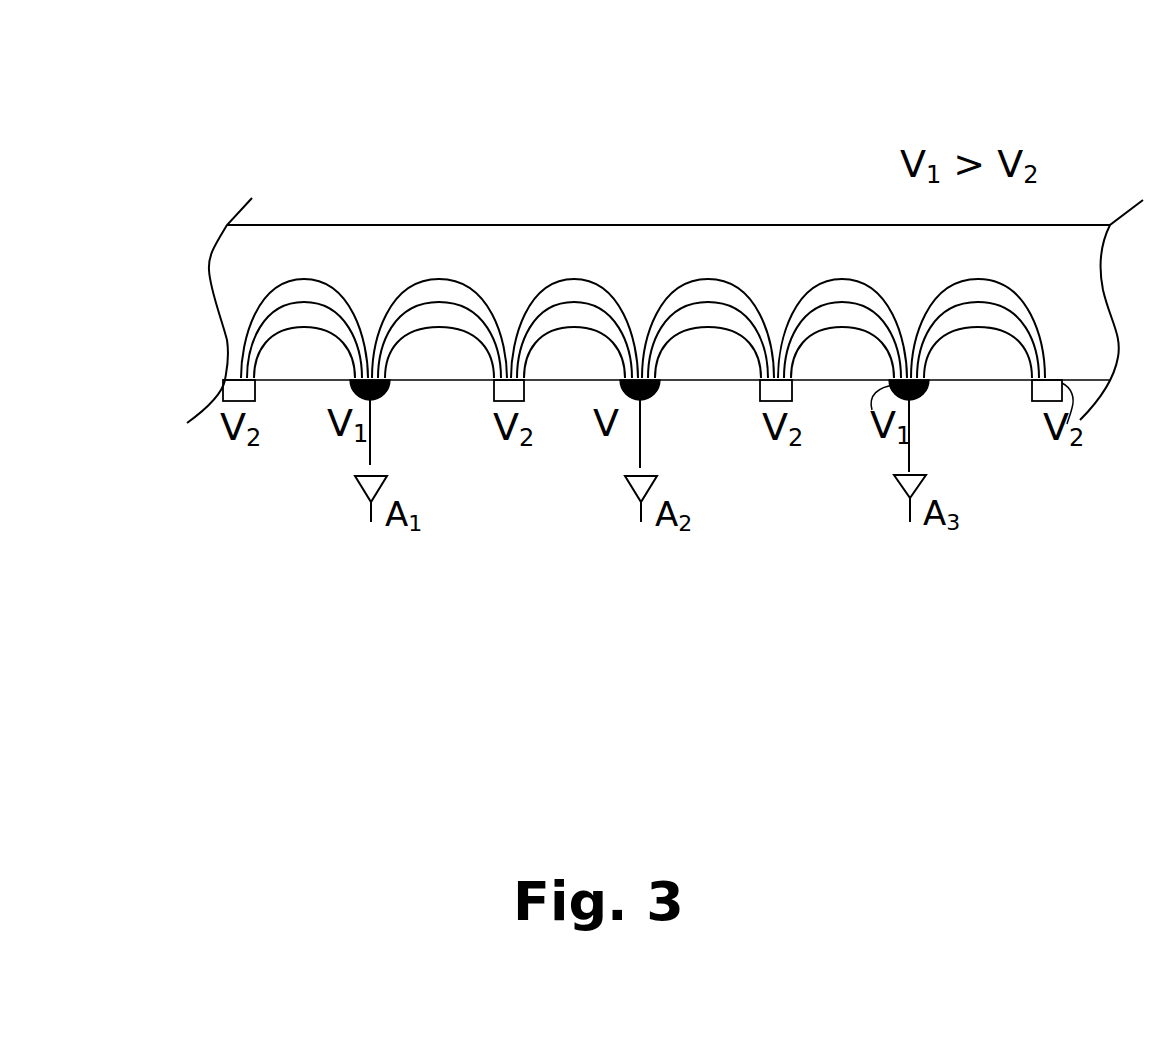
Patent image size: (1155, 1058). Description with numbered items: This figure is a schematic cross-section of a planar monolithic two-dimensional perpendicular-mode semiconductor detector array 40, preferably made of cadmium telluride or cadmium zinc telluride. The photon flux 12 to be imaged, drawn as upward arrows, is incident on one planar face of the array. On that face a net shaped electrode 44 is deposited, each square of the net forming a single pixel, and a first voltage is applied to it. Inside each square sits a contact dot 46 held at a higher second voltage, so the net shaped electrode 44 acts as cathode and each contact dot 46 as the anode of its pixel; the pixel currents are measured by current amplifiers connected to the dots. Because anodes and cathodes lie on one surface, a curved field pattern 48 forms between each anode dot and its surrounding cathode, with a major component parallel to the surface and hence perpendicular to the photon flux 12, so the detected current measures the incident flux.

The photon flux 12 is at (247, 625).
The semiconductor detector array 40 is at (737, 190).
The net shaped electrode 44 is at (792, 402).
The contact dot 46 is at (653, 390).
The curved field pattern 48 is at (1013, 290).